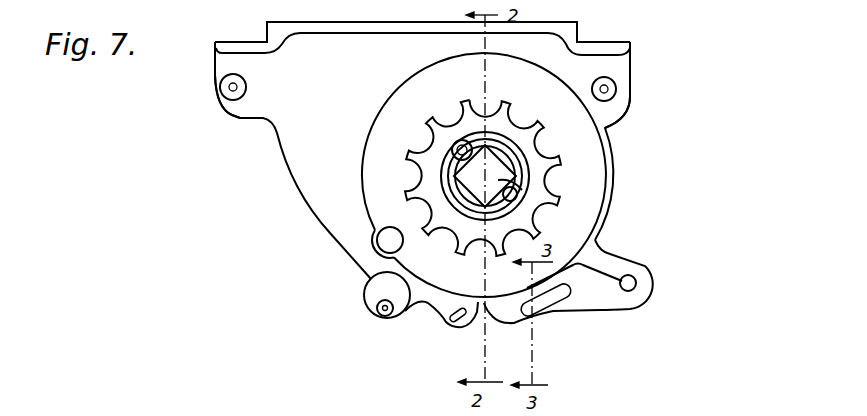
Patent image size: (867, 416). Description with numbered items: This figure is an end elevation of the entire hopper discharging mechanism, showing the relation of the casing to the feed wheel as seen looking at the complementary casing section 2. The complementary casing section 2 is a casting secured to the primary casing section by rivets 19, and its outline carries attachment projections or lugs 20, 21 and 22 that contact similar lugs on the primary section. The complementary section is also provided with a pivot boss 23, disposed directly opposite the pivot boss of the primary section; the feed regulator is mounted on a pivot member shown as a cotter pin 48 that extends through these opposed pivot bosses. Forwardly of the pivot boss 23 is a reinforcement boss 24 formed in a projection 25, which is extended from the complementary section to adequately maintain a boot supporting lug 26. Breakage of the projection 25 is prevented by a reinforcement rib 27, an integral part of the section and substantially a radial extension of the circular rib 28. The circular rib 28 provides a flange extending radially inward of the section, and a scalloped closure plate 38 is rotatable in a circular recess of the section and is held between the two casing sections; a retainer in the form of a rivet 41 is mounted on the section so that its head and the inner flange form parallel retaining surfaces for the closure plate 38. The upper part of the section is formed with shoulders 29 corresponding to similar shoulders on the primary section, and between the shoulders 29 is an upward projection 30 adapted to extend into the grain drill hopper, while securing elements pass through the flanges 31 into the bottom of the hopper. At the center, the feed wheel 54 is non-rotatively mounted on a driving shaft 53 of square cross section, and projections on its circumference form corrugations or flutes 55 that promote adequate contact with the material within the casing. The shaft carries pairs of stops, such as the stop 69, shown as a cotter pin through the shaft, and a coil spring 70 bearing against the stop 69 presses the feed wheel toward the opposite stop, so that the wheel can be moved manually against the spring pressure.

The complementary casing section 2 is at (422, 160).
The rivets 19 is at (226, 92).
The attachment lug 20 is at (626, 96).
The attachment lug 21 is at (369, 293).
The attachment lug 22 is at (240, 113).
The pivot boss 23 is at (463, 328).
The reinforcement boss 24 is at (545, 305).
The projection 25 is at (612, 304).
The boot supporting lug 26 is at (637, 280).
The reinforcement rib 27 is at (597, 265).
The circular rib 28 is at (372, 157).
The shoulders 29 is at (263, 33).
The upward projection 30 is at (400, 30).
The flanges 31 is at (232, 50).
The scalloped closure plate 38 is at (560, 177).
The rivet 41 is at (375, 246).
The cotter pin 48 is at (450, 323).
The driving shaft 53 is at (497, 181).
The feed wheel 54 is at (527, 140).
The flutes 55 is at (458, 250).
The stop 69 is at (458, 142).
The coil spring 70 is at (516, 174).